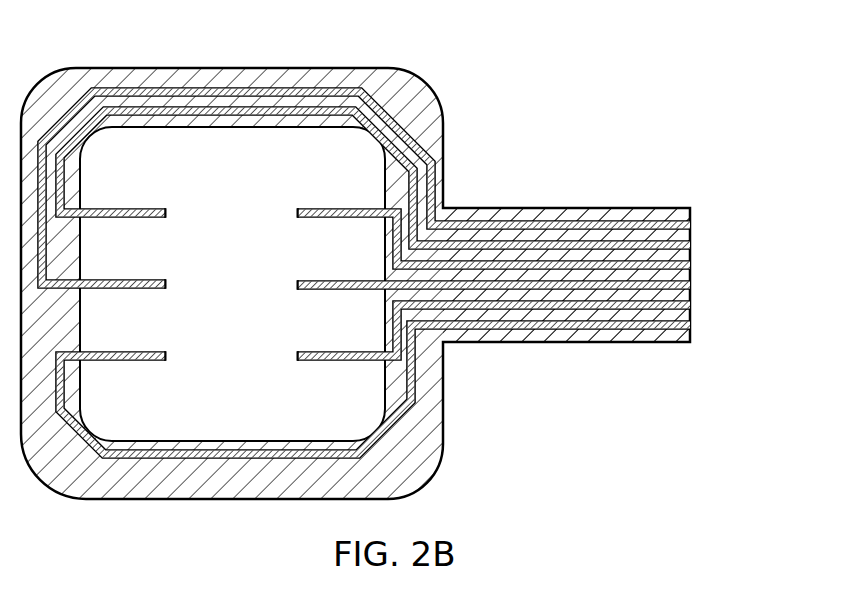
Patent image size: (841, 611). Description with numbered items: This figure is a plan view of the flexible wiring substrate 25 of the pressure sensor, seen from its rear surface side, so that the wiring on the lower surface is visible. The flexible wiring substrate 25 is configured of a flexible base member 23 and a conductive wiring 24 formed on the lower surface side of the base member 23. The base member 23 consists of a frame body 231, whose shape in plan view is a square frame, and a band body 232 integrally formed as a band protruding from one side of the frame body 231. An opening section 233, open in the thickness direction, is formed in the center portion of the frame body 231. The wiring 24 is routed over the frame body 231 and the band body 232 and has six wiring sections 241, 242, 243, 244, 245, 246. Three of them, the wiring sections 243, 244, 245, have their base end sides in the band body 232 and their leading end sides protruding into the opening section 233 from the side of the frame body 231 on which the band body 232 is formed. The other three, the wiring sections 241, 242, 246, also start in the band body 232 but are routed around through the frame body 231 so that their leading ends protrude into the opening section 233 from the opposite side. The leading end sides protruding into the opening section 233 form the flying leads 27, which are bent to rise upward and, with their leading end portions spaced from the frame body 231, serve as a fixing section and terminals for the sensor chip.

The flexible wiring substrate 25 is at (456, 73).
The opening section 233 is at (222, 165).
The base member 23 is at (620, 142).
The frame body 231 is at (443, 143).
The band body 232 is at (587, 209).
The wiring 24 is at (751, 197).
The wiring section 241 is at (110, 290).
The wiring section 242 is at (110, 219).
The wiring section 243 is at (320, 219).
The wiring section 244 is at (318, 290).
The wiring section 245 is at (320, 361).
The wiring section 246 is at (108, 361).
The flying leads 27 is at (160, 192).